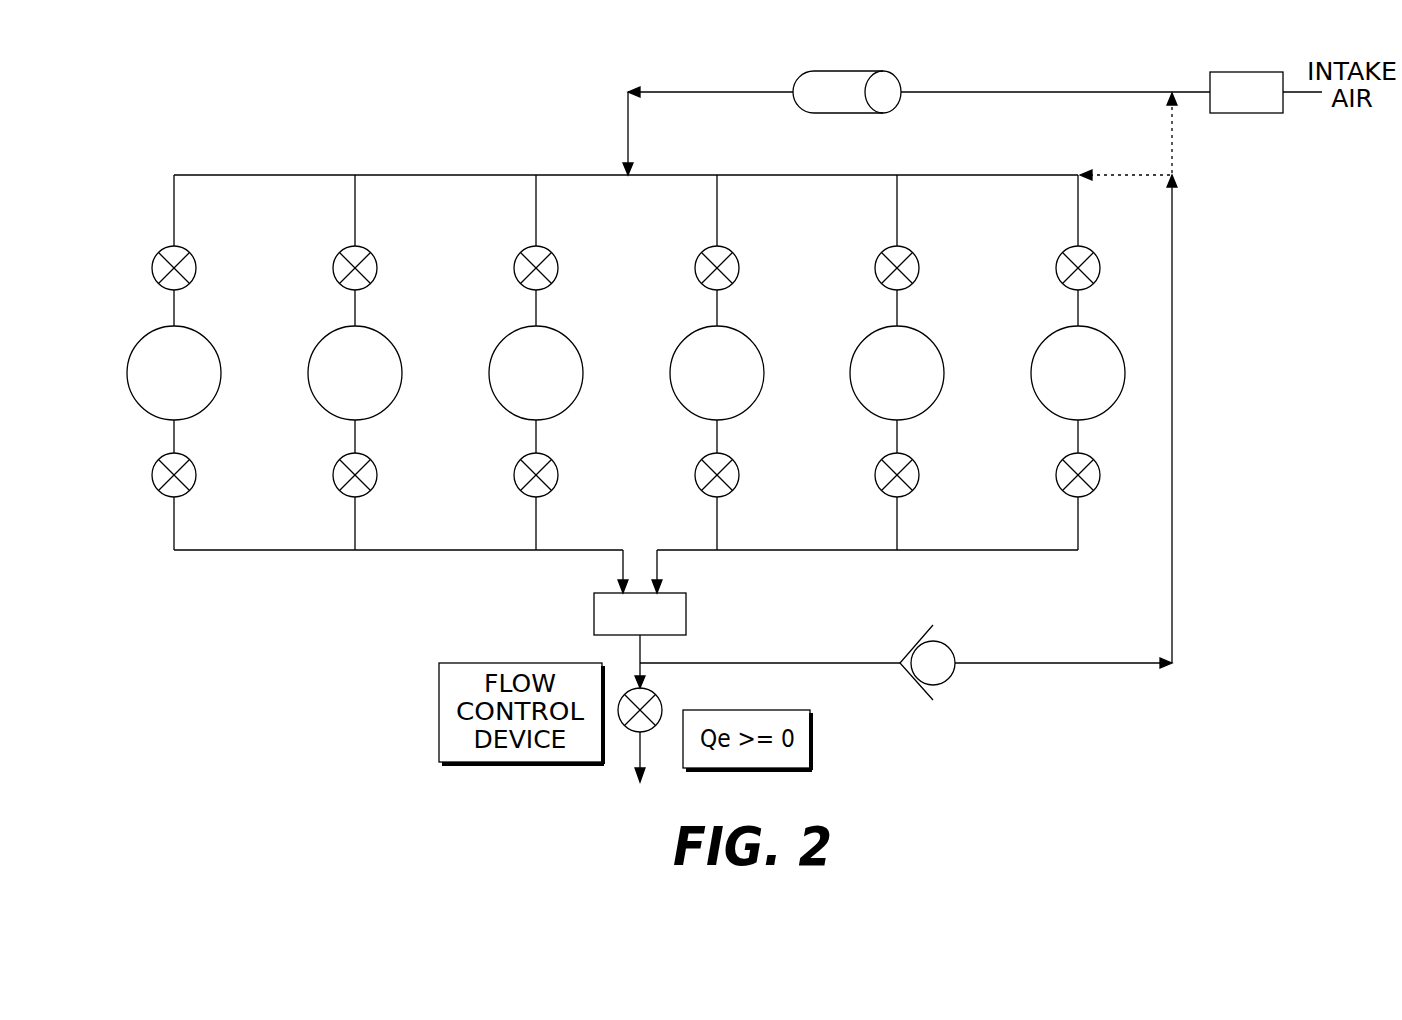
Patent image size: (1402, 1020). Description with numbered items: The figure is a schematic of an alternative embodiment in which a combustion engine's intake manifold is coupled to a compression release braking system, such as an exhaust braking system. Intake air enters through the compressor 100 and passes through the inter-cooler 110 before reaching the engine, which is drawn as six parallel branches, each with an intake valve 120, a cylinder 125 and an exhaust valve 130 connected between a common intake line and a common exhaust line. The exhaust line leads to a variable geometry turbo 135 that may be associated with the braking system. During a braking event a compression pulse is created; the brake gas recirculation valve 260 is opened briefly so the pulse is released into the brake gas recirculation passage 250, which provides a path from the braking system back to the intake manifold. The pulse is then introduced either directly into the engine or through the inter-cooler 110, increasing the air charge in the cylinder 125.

The compressor 100 is at (1232, 113).
The inter-cooler 110 is at (833, 114).
The intake valves 120 is at (152, 260).
The cylinders 125 is at (127, 375).
The exhaust valves 130 is at (152, 481).
The variable geometry turbo 135 is at (594, 615).
The brake gas recirculation passage 250 is at (1175, 432).
The brake gas recirculation valve 260 is at (950, 682).